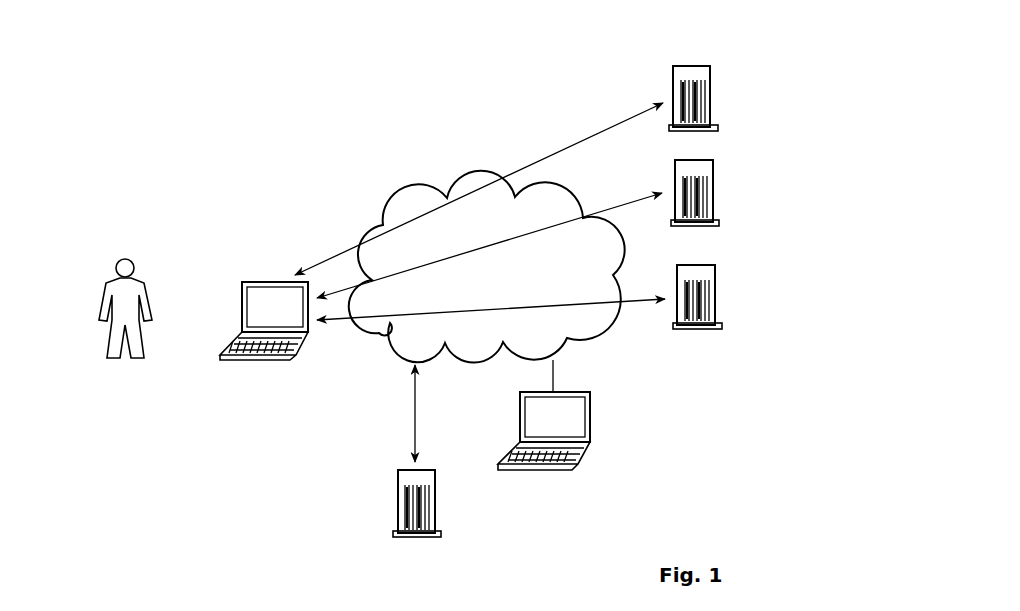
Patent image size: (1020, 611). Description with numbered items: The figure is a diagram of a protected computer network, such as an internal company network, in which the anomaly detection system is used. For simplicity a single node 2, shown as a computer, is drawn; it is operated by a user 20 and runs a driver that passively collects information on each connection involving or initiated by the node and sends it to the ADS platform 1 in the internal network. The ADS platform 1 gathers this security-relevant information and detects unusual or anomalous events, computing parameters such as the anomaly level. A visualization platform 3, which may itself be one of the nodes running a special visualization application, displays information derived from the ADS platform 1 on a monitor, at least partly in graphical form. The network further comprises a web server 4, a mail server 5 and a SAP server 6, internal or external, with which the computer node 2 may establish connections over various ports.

The ADS platform 1 is at (407, 537).
The node 2 is at (255, 360).
The visualization platform 3 is at (538, 475).
The web server 4 is at (683, 131).
The mail server 5 is at (683, 226).
The SAP server 6 is at (685, 329).
The user 20 is at (127, 363).